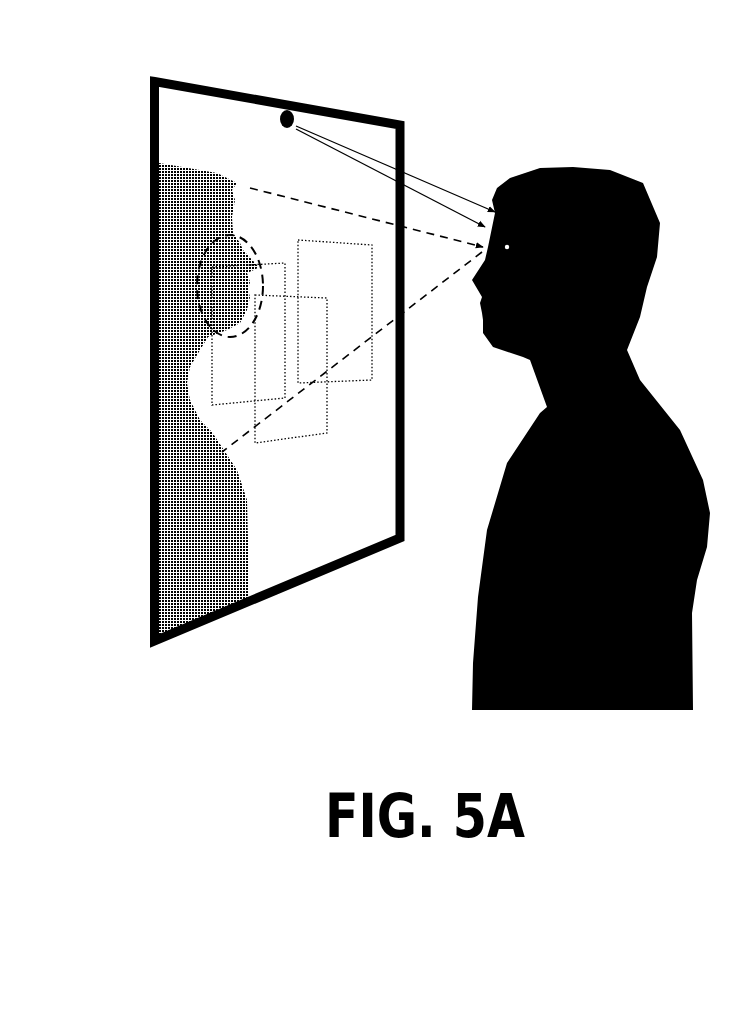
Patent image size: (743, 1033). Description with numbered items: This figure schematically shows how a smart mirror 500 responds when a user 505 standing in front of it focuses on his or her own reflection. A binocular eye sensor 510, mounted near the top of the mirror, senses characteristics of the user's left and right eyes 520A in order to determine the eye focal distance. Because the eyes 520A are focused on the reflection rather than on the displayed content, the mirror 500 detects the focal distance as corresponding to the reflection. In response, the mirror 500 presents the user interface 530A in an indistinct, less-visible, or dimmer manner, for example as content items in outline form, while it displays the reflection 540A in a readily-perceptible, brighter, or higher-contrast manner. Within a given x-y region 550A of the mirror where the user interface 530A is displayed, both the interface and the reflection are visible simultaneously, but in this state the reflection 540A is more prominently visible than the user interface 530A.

The smart mirror 500 is at (307, 585).
The user 505 is at (472, 705).
The binocular eye sensor 510 is at (290, 111).
The eyes 520A is at (427, 292).
The user interface 530A is at (282, 435).
The reflection 540A is at (245, 524).
The region 550A is at (250, 248).